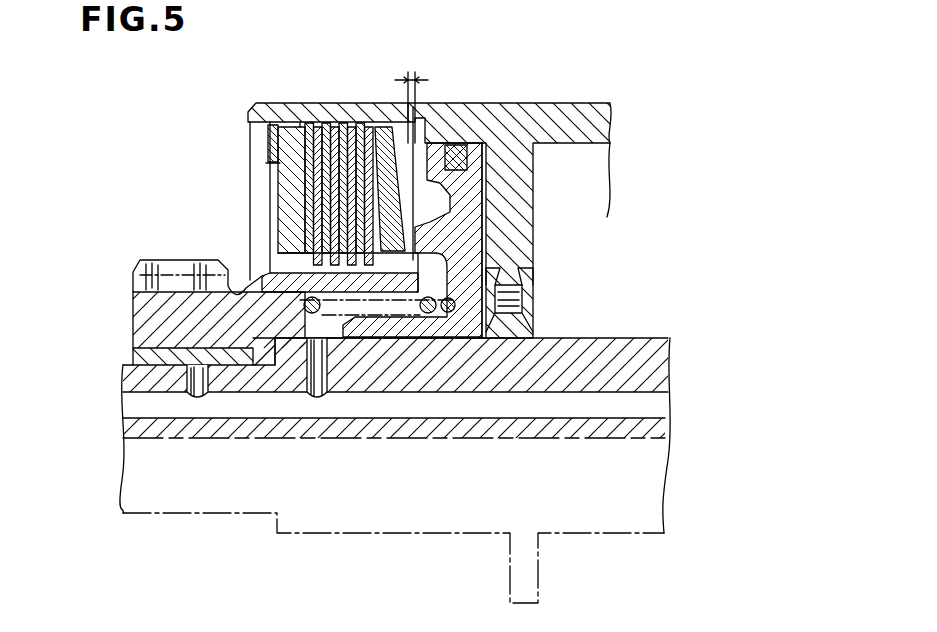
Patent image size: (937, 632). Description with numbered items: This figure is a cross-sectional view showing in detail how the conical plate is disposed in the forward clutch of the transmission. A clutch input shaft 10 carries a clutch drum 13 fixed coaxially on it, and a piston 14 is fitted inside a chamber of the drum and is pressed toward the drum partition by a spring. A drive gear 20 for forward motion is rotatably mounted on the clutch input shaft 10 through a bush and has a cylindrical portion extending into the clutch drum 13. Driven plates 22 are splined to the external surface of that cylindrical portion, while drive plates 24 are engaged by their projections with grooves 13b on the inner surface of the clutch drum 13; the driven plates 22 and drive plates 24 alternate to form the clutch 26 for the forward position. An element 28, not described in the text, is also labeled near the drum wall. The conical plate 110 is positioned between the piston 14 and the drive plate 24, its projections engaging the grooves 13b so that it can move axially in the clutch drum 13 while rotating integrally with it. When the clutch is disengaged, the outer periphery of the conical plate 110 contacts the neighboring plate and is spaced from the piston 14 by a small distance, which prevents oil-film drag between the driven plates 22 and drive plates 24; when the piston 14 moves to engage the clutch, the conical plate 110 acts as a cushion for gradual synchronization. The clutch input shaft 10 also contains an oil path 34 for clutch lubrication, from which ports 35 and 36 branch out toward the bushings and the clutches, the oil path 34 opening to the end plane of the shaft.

The clutch input shaft 10 is at (130, 380).
The clutch drum 13 is at (273, 103).
The grooves 13b is at (303, 126).
The piston 14 is at (438, 152).
The drive gear for forward motion 20 is at (170, 260).
The driven plates 22 is at (280, 186).
The drive plates 24 is at (350, 128).
The clutch for the forward position 26 is at (390, 280).
The retaining ring 28 is at (272, 162).
The oil path for clutch lubrication 34 is at (633, 402).
The port 35 is at (203, 398).
The port 36 is at (318, 398).
The conical plate 110 is at (386, 130).